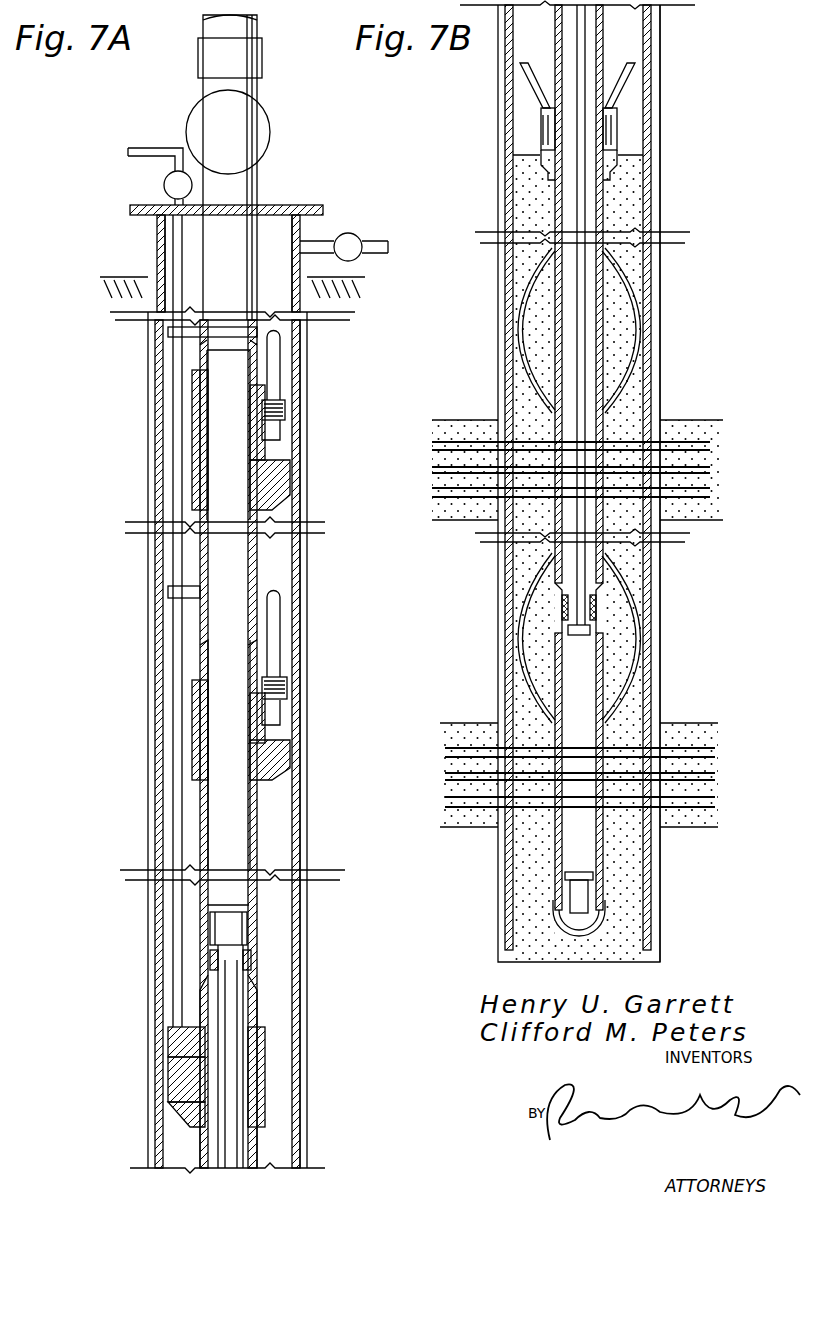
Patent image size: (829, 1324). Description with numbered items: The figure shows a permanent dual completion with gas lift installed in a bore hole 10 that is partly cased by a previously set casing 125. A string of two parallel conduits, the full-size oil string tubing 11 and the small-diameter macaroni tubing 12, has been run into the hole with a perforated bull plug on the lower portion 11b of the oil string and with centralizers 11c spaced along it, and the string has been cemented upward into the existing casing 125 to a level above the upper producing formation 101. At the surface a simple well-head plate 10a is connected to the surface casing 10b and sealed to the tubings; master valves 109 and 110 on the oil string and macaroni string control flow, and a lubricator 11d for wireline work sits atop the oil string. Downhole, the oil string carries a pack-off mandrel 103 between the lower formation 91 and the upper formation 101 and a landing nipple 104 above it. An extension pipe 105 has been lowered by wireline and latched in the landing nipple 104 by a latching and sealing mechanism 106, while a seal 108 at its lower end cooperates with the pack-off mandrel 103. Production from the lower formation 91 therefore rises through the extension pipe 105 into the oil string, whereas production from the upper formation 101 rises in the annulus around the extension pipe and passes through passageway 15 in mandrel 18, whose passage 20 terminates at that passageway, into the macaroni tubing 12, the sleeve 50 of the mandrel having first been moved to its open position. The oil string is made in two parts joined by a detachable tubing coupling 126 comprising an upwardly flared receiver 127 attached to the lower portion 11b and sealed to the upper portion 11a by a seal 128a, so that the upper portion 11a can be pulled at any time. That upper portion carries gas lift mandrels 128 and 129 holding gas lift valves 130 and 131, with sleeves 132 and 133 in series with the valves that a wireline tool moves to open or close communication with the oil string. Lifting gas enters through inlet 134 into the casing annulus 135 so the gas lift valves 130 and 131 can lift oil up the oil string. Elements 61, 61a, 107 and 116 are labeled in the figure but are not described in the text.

In FIG. 7A, the bore hole 10 is at (308, 330).
In FIG. 7B, the bore hole 10 is at (660, 183).
In FIG. 7A, the plate 10a is at (272, 206).
In FIG. 7A, the surface casing 10b is at (300, 262).
In FIG. 7A, the tubing (oil string) 11 is at (255, 828).
In FIG. 7B, the upper portion of the oil string 11a is at (605, 22).
In FIG. 7B, the lower portion of the oil string 11b is at (610, 208).
In FIG. 7B, the centralizers 11c is at (635, 275).
In FIG. 7A, the lubricator 11d is at (250, 15).
In FIG. 7A, the macaroni tubing 12 is at (178, 925).
In FIG. 7A, the passageway 15 is at (195, 1070).
In FIG. 7A, the mandrel 18 is at (170, 1098).
In FIG. 7A, the passage 20 is at (170, 1053).
In FIG. 7A, the sleeve 50 is at (257, 1050).
In FIG. 7B, the lower perforations 61 is at (700, 780).
In FIG. 7B, the upper perforations 61a is at (690, 450).
In FIG. 7B, the lower formation 91 is at (700, 725).
In FIG. 7B, the upper producing formation 101 is at (710, 422).
In FIG. 7B, the pack-off mandrel 103 is at (597, 600).
In FIG. 7A, the landing nipple 104 is at (205, 940).
In FIG. 7A, the extension pipe 105 is at (230, 995).
In FIG. 7B, the extension pipe 105 is at (580, 340).
In FIG. 7A, the latching and sealing mechanism 106 is at (246, 928).
In FIG. 7A, the seal 107 is at (252, 963).
In FIG. 7A, the seal 108 is at (240, 1140).
In FIG. 7B, the seal 108 is at (590, 620).
In FIG. 7A, the master valve 109 is at (270, 118).
In FIG. 7A, the master valve 110 is at (164, 184).
In FIG. 7B, the bottom closure 116 is at (598, 912).
In FIG. 7A, the casing 125 is at (296, 802).
In FIG. 7B, the casing 125 is at (655, 860).
In FIG. 7B, the detachable tubing coupling 126 is at (622, 143).
In FIG. 7B, the upwardly flared receiver 127 is at (620, 80).
In FIG. 7A, the gas lift mandrel 128 is at (278, 747).
In FIG. 7B, the seal 128a is at (614, 130).
In FIG. 7A, the gas lift mandrel 129 is at (280, 470).
In FIG. 7A, the gas lift valve 130 is at (273, 615).
In FIG. 7A, the gas lift valve 131 is at (273, 364).
In FIG. 7A, the sleeve 132 is at (200, 705).
In FIG. 7A, the sleeve 133 is at (200, 430).
In FIG. 7A, the inlet 134 is at (372, 244).
In FIG. 7A, the casing annulus 135 is at (272, 230).